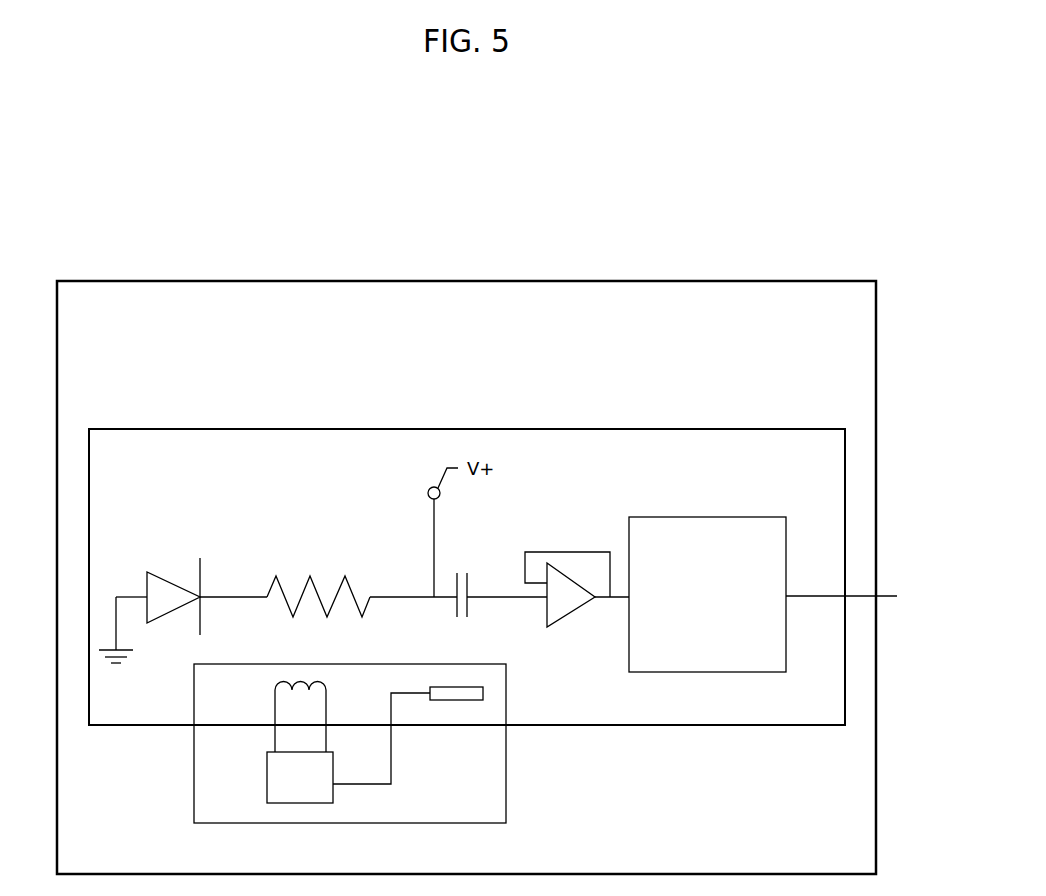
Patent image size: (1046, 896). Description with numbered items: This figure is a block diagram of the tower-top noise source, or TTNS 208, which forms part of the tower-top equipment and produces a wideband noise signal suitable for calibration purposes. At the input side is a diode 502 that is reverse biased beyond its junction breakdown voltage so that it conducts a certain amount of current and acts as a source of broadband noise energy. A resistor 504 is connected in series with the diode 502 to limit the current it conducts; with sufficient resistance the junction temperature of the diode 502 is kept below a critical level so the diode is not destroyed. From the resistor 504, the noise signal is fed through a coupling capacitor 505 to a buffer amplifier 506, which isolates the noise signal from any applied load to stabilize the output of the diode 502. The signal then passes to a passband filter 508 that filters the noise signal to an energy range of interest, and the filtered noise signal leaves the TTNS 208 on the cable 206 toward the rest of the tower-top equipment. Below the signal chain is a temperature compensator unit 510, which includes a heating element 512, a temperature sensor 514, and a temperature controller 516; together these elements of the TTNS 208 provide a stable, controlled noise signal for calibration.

The TTNS 208 is at (639, 240).
The cable 206 is at (856, 563).
The diode 502 is at (184, 589).
The resistor 504 is at (362, 566).
The coupling capacitor 505 is at (507, 556).
The buffer amplifier 506 is at (597, 541).
The passband filter 508 is at (707, 564).
The temperature compensator unit 510 is at (314, 743).
The heating element 512 is at (262, 696).
The temperature sensor 514 is at (512, 678).
The temperature controller 516 is at (363, 776).